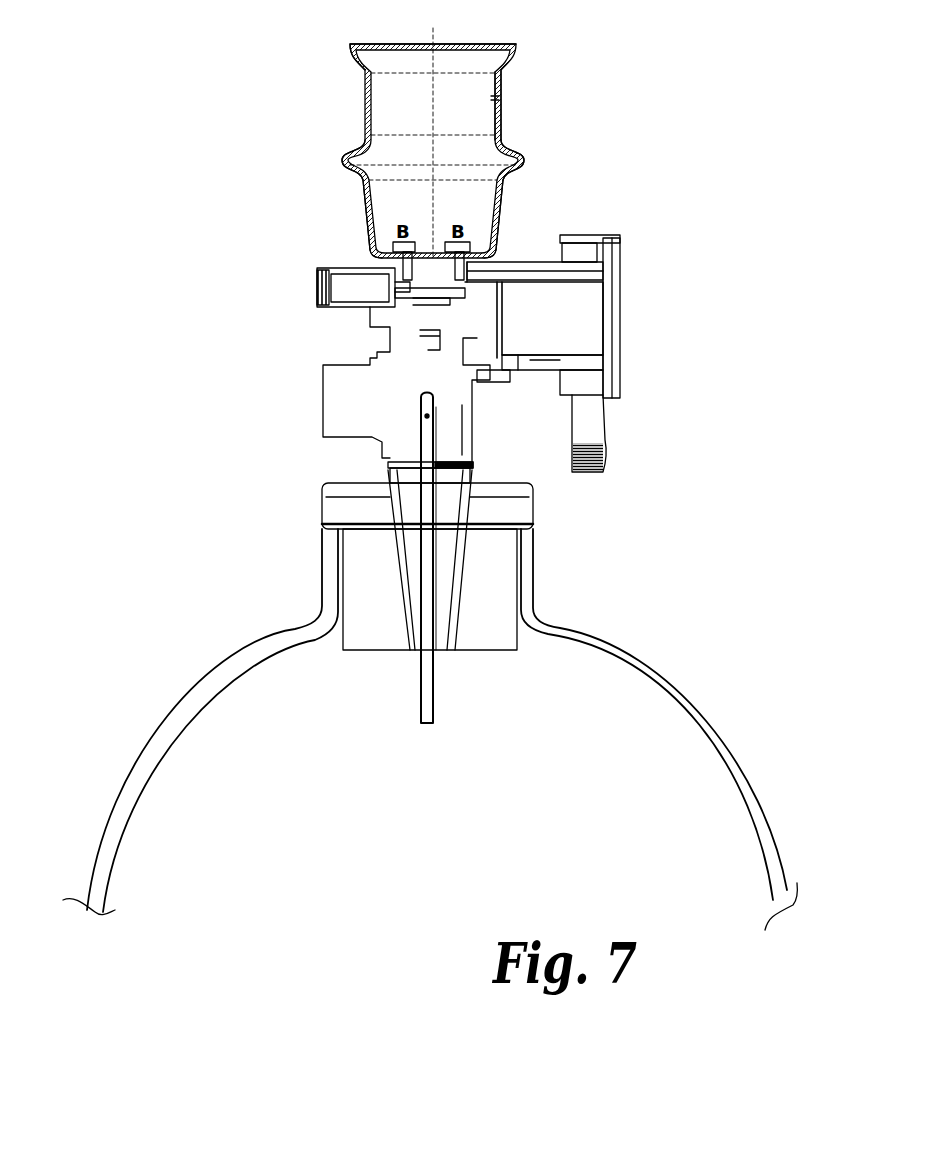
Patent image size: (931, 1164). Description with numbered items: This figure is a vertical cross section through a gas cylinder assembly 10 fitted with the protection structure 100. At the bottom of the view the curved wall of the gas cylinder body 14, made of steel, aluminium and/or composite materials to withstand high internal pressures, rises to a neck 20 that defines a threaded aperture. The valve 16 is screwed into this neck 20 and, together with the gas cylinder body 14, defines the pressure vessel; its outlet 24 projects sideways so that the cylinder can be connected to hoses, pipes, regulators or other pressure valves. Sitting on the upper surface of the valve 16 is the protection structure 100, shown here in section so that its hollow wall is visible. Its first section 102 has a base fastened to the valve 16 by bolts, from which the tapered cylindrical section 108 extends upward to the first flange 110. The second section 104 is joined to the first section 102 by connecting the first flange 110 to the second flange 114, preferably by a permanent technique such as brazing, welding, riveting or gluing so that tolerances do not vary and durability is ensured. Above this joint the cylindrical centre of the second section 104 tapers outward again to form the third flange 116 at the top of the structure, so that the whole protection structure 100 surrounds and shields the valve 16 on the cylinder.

The gas cylinder assembly 10 is at (772, 297).
The gas cylinder body 14 is at (757, 810).
The valve 16 is at (205, 352).
The neck 20 is at (322, 580).
The outlet 24 is at (368, 428).
The protection structure 100 is at (290, 130).
The first section 102 is at (365, 210).
The second section 104 is at (504, 118).
The tapered cylindrical section 108 is at (503, 226).
The first flange 110 is at (526, 165).
The second flange 114 is at (342, 162).
The third flange 116 is at (348, 48).